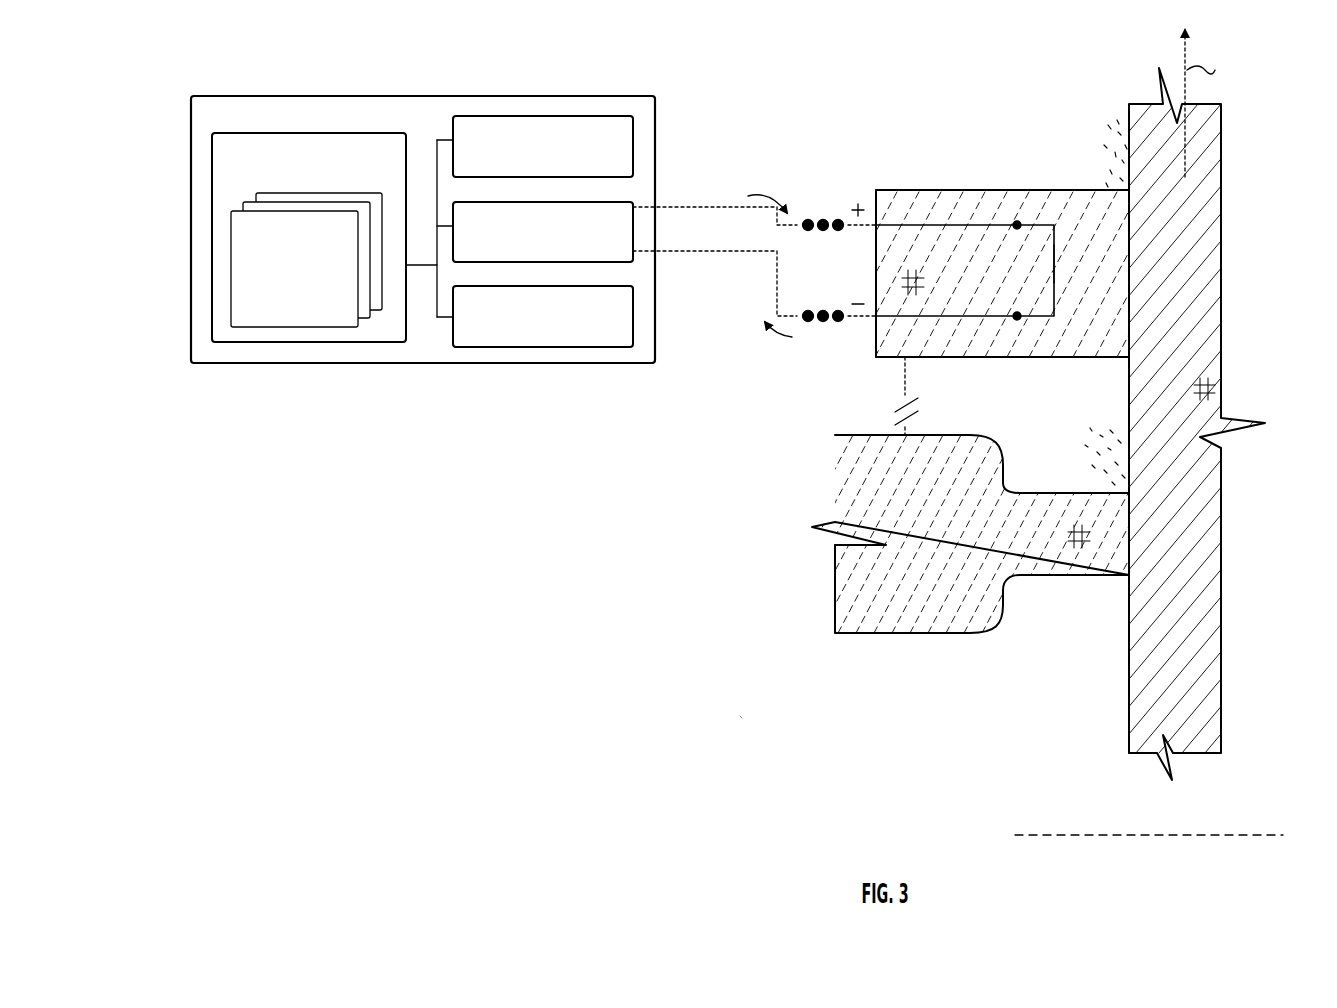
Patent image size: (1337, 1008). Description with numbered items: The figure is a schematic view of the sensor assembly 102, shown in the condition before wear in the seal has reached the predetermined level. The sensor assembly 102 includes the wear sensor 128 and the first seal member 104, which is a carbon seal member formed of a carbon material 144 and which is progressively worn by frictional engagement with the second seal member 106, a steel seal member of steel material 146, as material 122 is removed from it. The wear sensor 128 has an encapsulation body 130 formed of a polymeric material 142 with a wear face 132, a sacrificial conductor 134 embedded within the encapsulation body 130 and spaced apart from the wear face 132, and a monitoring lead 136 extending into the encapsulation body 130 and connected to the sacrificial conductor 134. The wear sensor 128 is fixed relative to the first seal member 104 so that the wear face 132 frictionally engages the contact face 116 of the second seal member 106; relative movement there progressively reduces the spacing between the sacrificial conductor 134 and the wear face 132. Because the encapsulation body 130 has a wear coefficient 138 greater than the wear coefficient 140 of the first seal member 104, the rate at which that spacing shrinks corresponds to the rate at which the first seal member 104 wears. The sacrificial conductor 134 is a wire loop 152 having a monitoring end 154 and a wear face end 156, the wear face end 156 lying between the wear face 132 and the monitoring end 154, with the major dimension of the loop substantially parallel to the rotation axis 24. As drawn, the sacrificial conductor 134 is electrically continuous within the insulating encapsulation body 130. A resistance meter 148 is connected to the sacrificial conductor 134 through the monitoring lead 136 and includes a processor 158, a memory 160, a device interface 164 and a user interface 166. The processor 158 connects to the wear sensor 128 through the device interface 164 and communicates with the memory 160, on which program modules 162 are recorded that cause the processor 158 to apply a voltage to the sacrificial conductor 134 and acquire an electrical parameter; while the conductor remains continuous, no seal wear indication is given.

The rotation axis 24 is at (1213, 835).
The sensor assembly 102 is at (735, 718).
The first seal member 104 is at (930, 618).
The second seal member 106 is at (1190, 753).
The contact face 116 is at (1129, 662).
The material 122 is at (1063, 415).
The wear sensor 128 is at (968, 165).
The encapsulation body 130 is at (1092, 200).
The wear face 132 is at (1122, 300).
The sacrificial conductor 134 is at (1054, 283).
The monitoring lead 136 is at (910, 224).
The wear coefficient 138 is at (912, 292).
The wear coefficient 140 is at (1080, 545).
The polymeric material 142 is at (957, 325).
The carbon material 144 is at (890, 606).
The steel material 146 is at (1205, 692).
The resistance meter 148 is at (392, 363).
The wire loop 152 is at (1054, 245).
The monitoring end 154 is at (1031, 203).
The wear face end 156 is at (1053, 203).
The processor 158 is at (554, 116).
The memory 160 is at (243, 343).
The program modules 162 is at (317, 330).
The device interface 164 is at (633, 262).
The user interface 166 is at (523, 347).